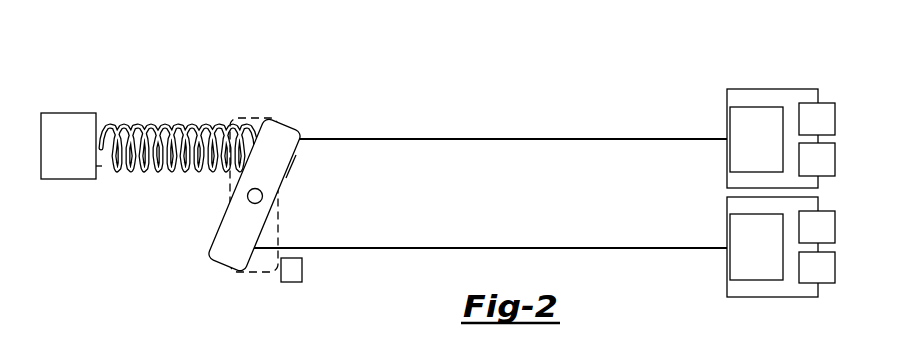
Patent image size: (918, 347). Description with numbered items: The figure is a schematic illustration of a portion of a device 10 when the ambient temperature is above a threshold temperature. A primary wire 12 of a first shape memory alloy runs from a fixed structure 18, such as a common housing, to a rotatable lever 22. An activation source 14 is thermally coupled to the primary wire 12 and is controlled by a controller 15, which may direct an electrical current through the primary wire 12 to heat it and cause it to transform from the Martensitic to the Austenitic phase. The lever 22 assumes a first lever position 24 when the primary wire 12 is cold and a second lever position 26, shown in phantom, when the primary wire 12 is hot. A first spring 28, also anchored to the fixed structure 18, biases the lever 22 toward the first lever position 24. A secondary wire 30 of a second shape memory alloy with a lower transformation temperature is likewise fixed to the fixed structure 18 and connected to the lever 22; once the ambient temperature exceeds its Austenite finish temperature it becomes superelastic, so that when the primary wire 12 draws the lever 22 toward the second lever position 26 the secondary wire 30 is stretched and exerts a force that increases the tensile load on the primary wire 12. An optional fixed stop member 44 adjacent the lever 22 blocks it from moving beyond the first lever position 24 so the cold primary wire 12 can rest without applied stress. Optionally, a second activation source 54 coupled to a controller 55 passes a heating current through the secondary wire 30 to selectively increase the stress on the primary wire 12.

The device 10 is at (603, 59).
The primary wire 12 is at (516, 138).
The activation source 14 is at (826, 128).
The controller 15 is at (826, 169).
The fixed structure 18 is at (76, 155).
The rotatable lever 22 is at (279, 118).
The first lever position 24 is at (278, 208).
The second lever position 26 is at (297, 155).
The first spring 28 is at (127, 128).
The secondary wire 30 is at (519, 247).
The fixed stop member 44 is at (302, 268).
The second activation source 54 is at (826, 238).
The controller 55 is at (826, 278).